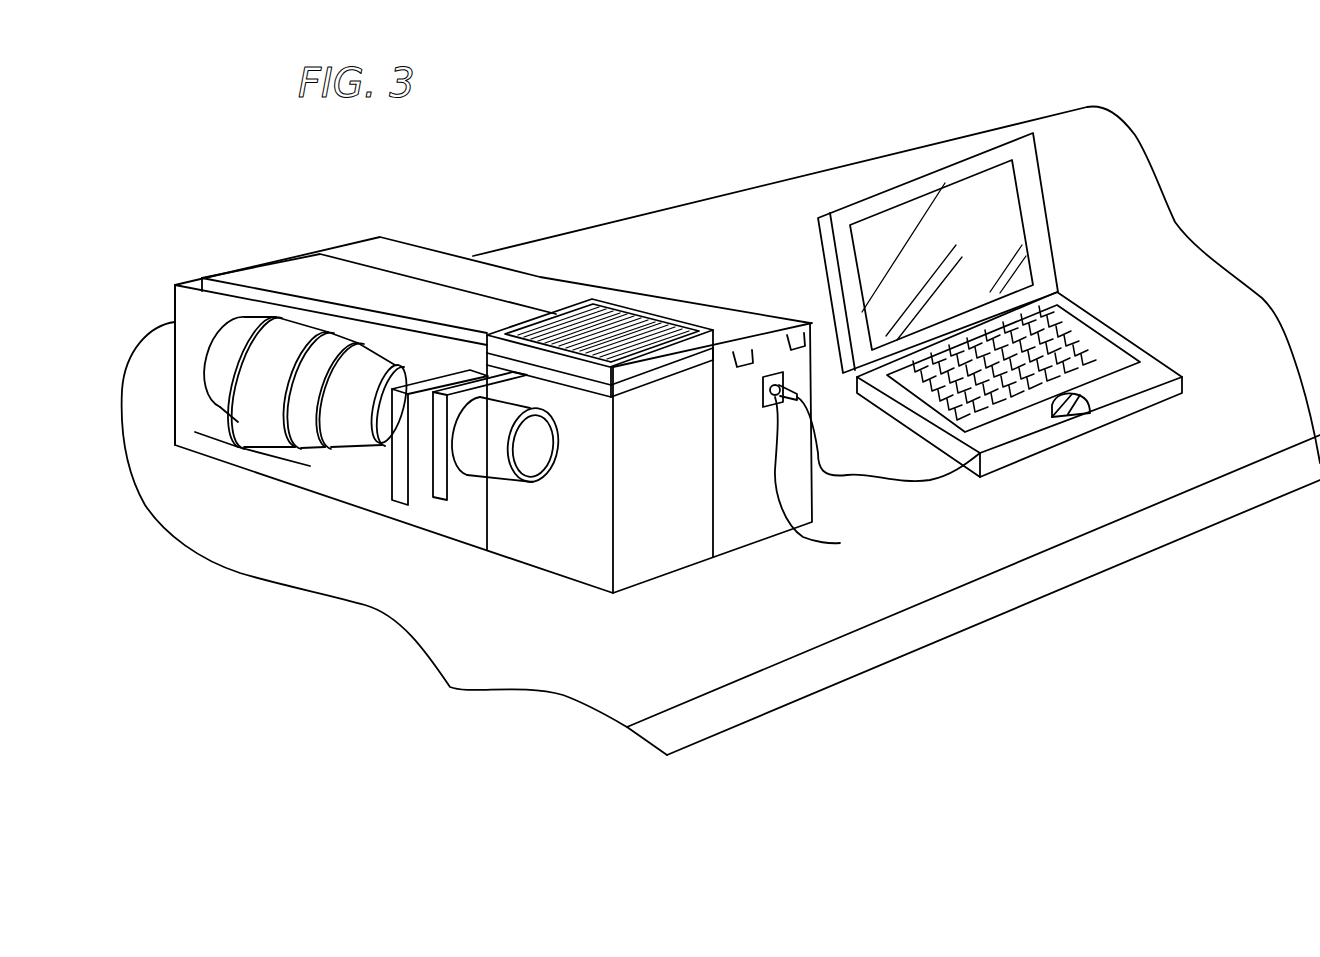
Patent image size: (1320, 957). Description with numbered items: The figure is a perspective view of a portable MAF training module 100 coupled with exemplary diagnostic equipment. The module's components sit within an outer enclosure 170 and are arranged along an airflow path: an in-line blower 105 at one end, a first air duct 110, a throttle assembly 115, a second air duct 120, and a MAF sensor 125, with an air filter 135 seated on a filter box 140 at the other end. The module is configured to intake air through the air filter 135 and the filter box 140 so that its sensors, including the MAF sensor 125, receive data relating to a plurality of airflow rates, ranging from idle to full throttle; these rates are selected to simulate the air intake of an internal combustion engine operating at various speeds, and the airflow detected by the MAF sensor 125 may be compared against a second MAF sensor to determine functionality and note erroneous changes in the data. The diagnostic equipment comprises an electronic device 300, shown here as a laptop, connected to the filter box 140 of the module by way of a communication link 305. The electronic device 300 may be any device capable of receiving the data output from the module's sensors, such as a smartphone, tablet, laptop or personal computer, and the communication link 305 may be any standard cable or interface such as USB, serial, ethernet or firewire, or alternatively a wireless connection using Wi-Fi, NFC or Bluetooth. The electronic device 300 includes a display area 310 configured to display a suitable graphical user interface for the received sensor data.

The portable MAF training module 100 is at (399, 228).
The in-line blower 105 is at (263, 412).
The first air duct 110 is at (337, 412).
The throttle assembly 115 is at (405, 428).
The second air duct 120 is at (477, 462).
The MAF sensor 125 is at (480, 413).
The air filter 135 is at (620, 323).
The filter box 140 is at (693, 510).
The outer enclosure 170 is at (279, 259).
The electronic device 300 is at (1110, 293).
The communication link 305 is at (877, 478).
The display area 310 is at (943, 228).